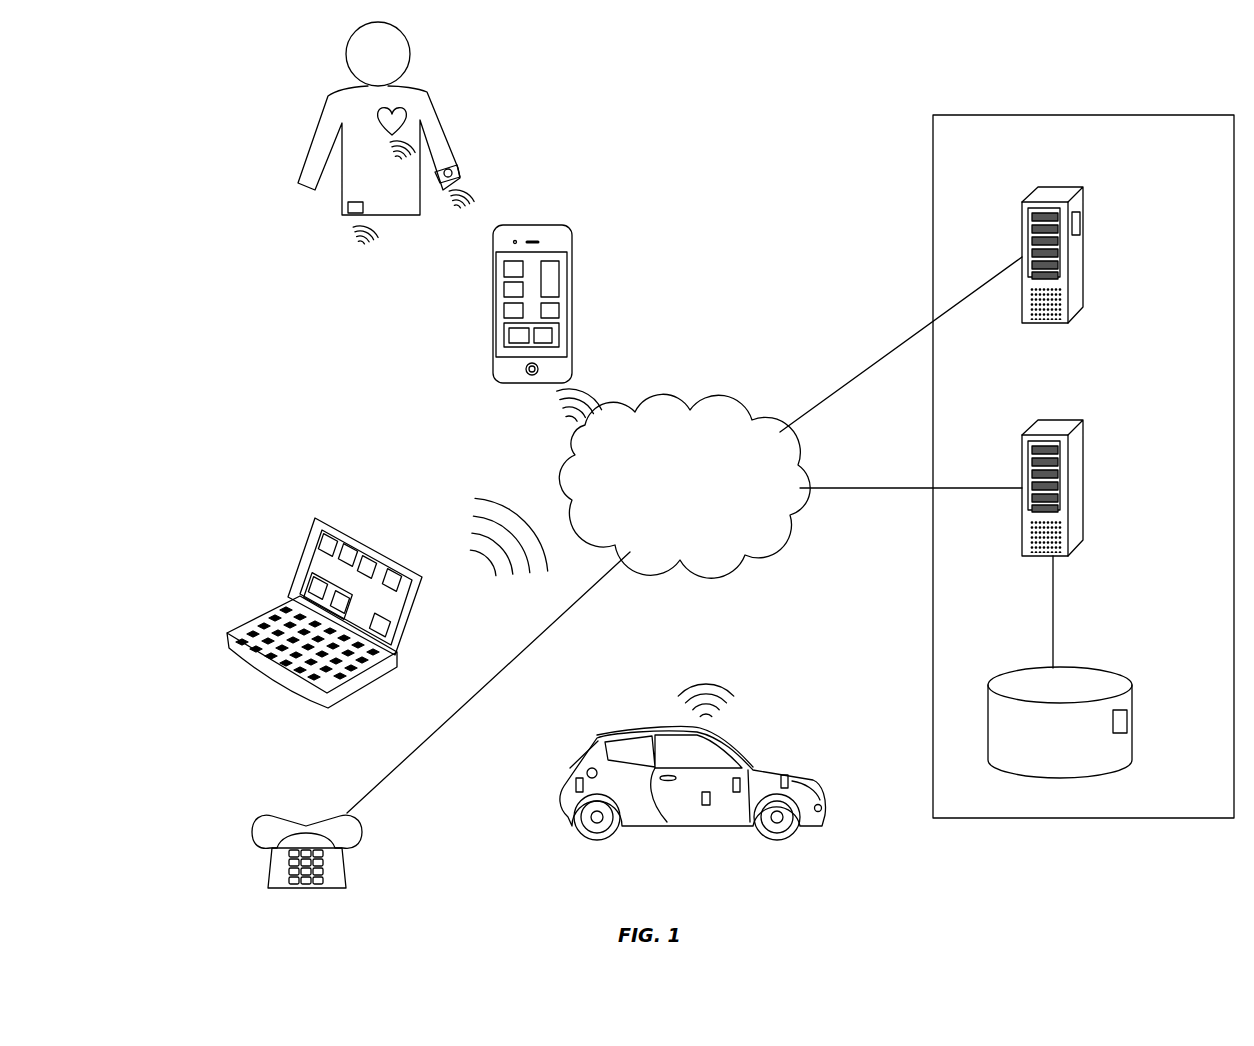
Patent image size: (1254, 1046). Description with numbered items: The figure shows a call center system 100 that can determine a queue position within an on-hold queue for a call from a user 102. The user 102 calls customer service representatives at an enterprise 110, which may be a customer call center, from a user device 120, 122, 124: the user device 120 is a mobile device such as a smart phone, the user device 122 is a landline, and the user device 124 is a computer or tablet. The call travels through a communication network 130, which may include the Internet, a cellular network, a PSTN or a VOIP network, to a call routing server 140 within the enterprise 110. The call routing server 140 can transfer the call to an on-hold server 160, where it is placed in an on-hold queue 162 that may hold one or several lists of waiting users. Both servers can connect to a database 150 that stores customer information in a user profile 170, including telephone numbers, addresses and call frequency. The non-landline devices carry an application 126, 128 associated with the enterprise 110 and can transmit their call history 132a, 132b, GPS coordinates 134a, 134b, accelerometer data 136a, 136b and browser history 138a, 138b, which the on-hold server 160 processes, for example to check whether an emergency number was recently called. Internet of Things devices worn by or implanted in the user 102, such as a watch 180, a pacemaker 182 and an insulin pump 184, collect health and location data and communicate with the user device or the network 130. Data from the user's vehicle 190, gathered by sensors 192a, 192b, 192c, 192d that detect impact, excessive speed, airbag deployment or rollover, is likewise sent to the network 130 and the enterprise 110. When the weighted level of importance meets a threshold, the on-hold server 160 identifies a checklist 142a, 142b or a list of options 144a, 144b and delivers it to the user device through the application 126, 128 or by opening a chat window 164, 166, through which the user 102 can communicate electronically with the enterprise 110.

The call center system 100 is at (131, 141).
The user 102 is at (318, 117).
The enterprise 110 is at (932, 204).
The user device 120 is at (563, 227).
The user device 122 is at (265, 822).
The user device 124 is at (412, 607).
The application 126 is at (559, 280).
The application 128 is at (400, 571).
The communication network 130 is at (760, 405).
The call history 132a is at (504, 268).
The call history 132b is at (327, 534).
The GPS coordinates 134a is at (504, 289).
The GPS coordinates 134b is at (349, 545).
The accelerometer data 136a is at (504, 310).
The accelerometer data 136b is at (369, 558).
The browser history 138a is at (559, 307).
The browser history 138b is at (386, 632).
The call routing server 140 is at (1063, 420).
The checklist 142a is at (509, 336).
The checklist 142b is at (310, 589).
The list of options 144a is at (553, 341).
The list of options 144b is at (333, 608).
The database 150 is at (1118, 671).
The on-hold server 160 is at (1063, 187).
The on-hold queue 162 is at (1081, 223).
The chat window 164 is at (559, 328).
The chat window 166 is at (311, 576).
The user profile 170 is at (1128, 722).
The watch 180 is at (461, 171).
The pacemaker 182 is at (407, 118).
The insulin pump 184 is at (348, 207).
The vehicle 190 is at (648, 732).
The sensor 192a is at (786, 775).
The sensor 192b is at (738, 777).
The sensor 192c is at (706, 806).
The sensor 192d is at (576, 785).